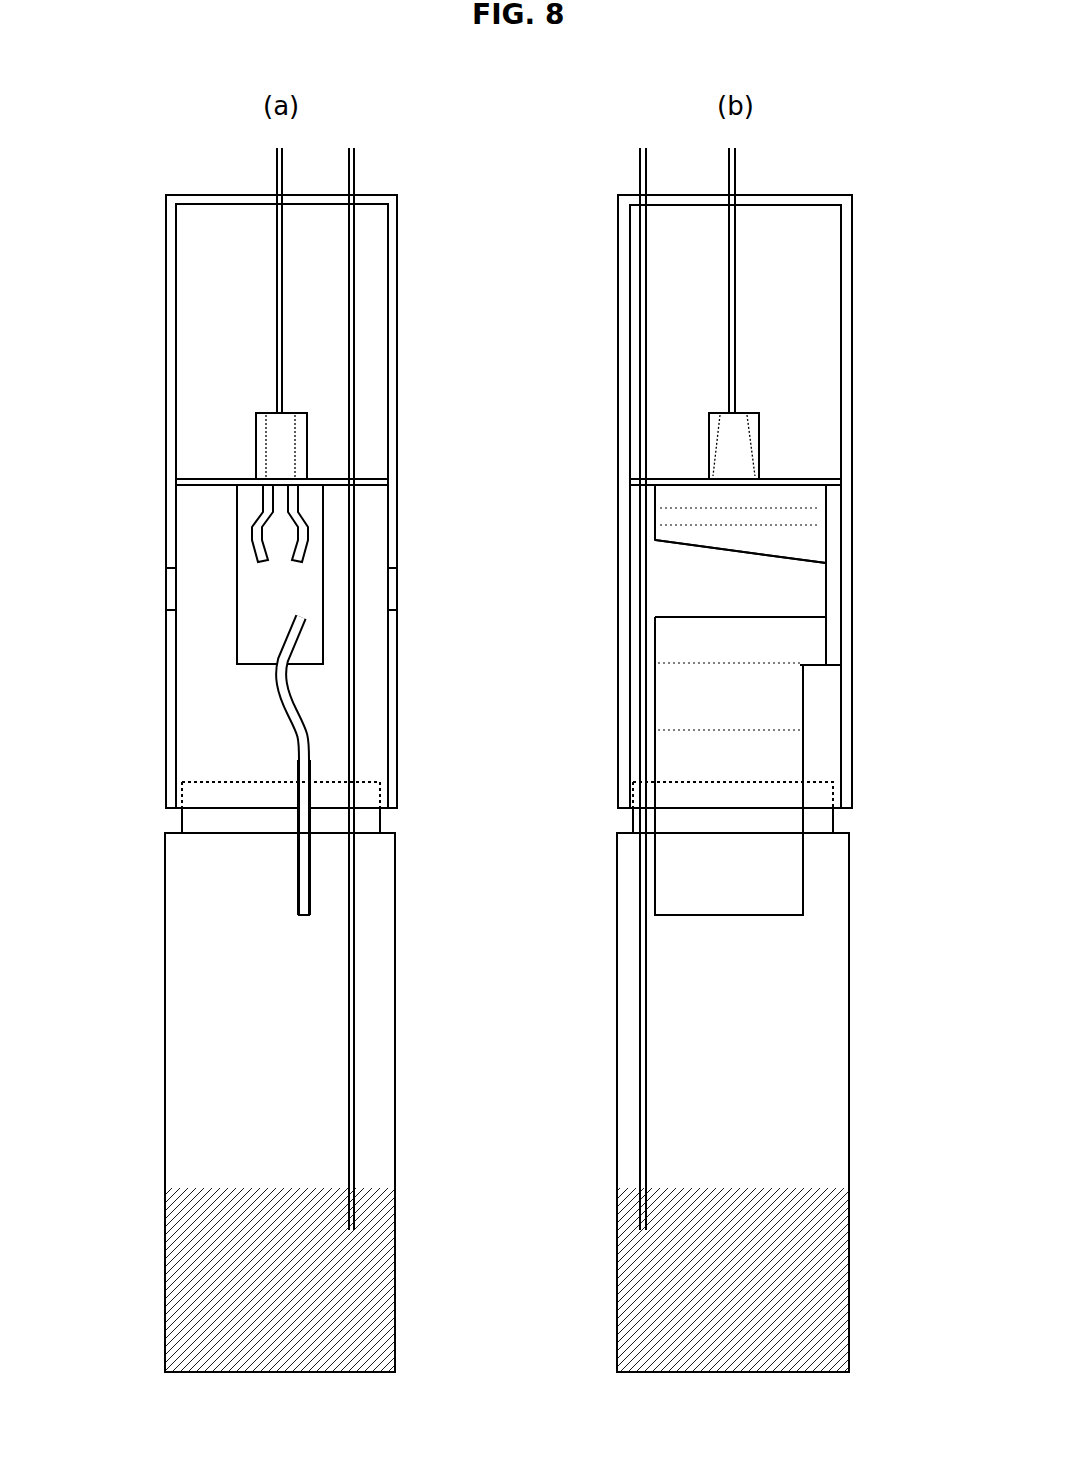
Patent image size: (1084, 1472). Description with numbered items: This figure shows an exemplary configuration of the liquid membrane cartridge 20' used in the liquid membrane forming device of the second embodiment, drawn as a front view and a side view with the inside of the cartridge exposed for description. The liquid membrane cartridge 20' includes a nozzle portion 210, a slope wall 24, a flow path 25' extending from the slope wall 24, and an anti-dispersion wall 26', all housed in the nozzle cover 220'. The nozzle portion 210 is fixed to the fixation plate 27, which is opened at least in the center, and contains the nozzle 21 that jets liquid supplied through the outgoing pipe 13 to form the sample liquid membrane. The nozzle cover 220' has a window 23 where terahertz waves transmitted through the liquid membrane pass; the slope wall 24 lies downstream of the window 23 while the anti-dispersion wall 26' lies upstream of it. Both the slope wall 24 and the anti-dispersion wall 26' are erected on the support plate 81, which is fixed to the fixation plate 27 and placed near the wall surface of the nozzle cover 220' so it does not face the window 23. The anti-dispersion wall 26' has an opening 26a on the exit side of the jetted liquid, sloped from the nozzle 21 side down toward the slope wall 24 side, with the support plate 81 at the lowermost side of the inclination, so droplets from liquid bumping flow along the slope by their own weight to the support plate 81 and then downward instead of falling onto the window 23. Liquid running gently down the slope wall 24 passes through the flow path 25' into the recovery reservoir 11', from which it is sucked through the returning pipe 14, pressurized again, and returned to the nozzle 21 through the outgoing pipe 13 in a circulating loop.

The liquid membrane cartridge 20' is at (546, 449).
The nozzle cover 220' is at (355, 501).
The outgoing pipe 13 is at (275, 300).
The returning pipe 14 is at (641, 340).
The nozzle portion 210 is at (258, 440).
The nozzle 21 is at (280, 437).
The fixation plate 27 is at (210, 480).
The support plate 81 is at (258, 612).
The anti-dispersion wall 26' is at (593, 521).
The opening 26a is at (748, 555).
The window 23 is at (165, 592).
The slope wall 24 is at (680, 682).
The flow path 25' is at (550, 837).
The recovery reservoir 11' is at (535, 1077).